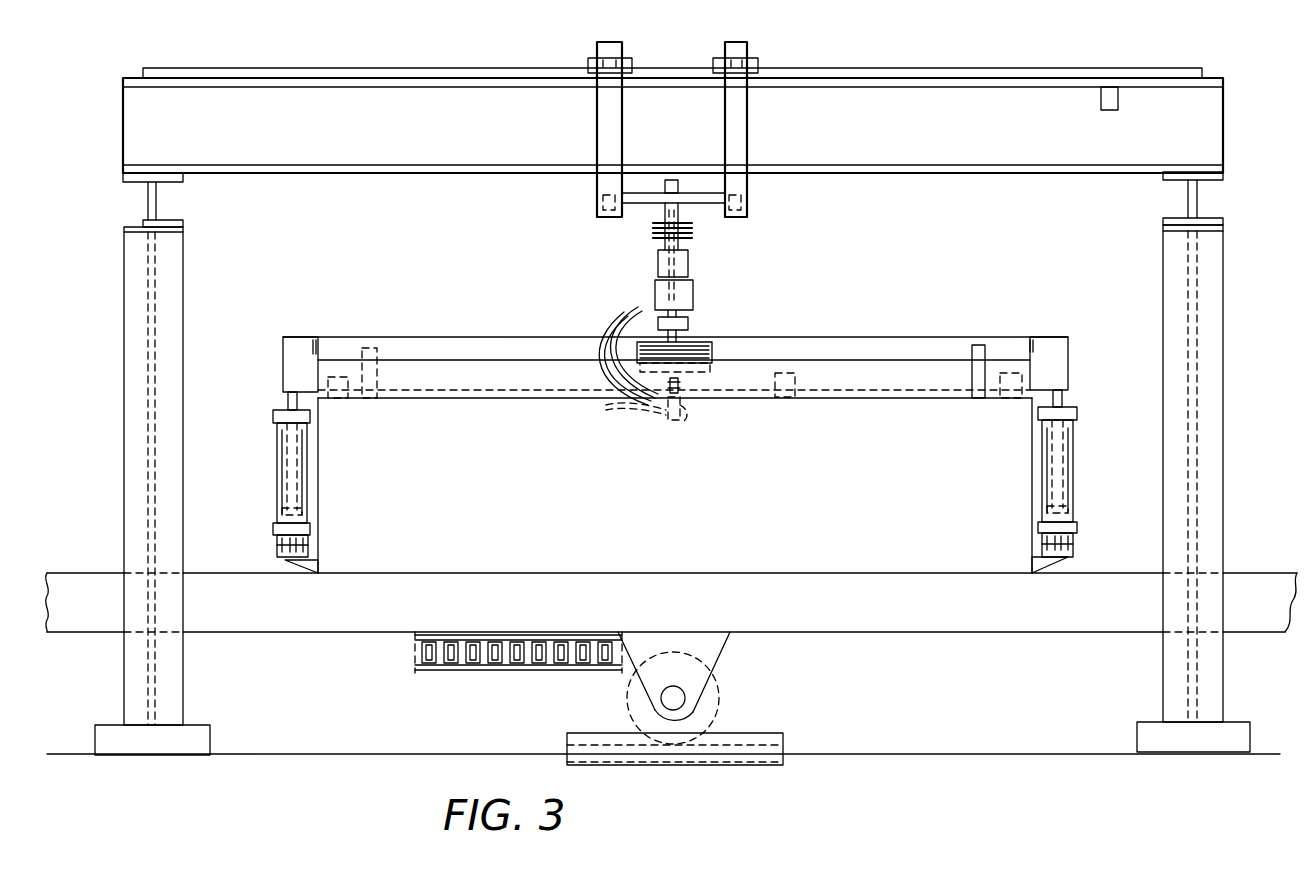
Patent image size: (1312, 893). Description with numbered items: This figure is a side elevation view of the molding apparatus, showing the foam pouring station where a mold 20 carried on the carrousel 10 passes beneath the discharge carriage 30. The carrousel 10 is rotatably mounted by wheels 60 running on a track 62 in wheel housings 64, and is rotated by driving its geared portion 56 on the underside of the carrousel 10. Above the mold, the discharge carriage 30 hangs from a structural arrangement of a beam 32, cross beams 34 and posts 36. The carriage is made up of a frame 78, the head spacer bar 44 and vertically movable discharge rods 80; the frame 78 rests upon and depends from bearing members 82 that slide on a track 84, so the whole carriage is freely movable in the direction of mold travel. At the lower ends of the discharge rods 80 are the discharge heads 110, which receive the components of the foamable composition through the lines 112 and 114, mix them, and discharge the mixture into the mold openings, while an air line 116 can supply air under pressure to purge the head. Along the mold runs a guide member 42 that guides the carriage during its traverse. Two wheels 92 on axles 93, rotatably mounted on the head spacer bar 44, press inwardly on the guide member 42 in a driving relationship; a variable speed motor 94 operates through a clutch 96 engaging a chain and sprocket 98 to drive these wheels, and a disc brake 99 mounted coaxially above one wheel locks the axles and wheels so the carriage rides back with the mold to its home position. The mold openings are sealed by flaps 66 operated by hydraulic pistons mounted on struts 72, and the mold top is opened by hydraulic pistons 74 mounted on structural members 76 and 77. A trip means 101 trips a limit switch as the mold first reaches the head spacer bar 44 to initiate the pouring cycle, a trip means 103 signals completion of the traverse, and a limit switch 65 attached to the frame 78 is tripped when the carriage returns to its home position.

The carrousel 10 is at (103, 573).
The mold 20 is at (816, 506).
The discharge carriage 30 is at (706, 287).
The beam 32 is at (272, 173).
The cross beams 34 is at (148, 198).
The posts 36 is at (124, 262).
The guide member 42 is at (447, 337).
The head spacer bar 44 is at (655, 292).
The geared portion 56 is at (440, 652).
The wheels 60 is at (627, 698).
The track 62 is at (770, 733).
The wheel housings 64 is at (722, 650).
The limit switch 65 is at (1118, 100).
The flaps 66 is at (432, 323).
The struts 72 is at (330, 377).
The hydraulic pistons 74 is at (277, 470).
The structural member 76 is at (290, 563).
The structural member 77 is at (283, 375).
The frame 78 is at (598, 200).
The discharge rods 80 is at (680, 385).
The bearing members 82 is at (597, 60).
The track 84 is at (318, 68).
The wheels 92 is at (713, 288).
The axles 93 is at (690, 345).
The variable speed motor 94 is at (688, 268).
The clutch 96 is at (688, 250).
The chain and sprocket 98 is at (653, 230).
The disc brake 99 is at (688, 322).
The trip means 101 is at (997, 312).
The trip means 103 is at (377, 348).
The discharge heads 110 is at (678, 420).
The line 112 is at (624, 314).
The line 114 is at (606, 408).
The air line 116 is at (638, 307).